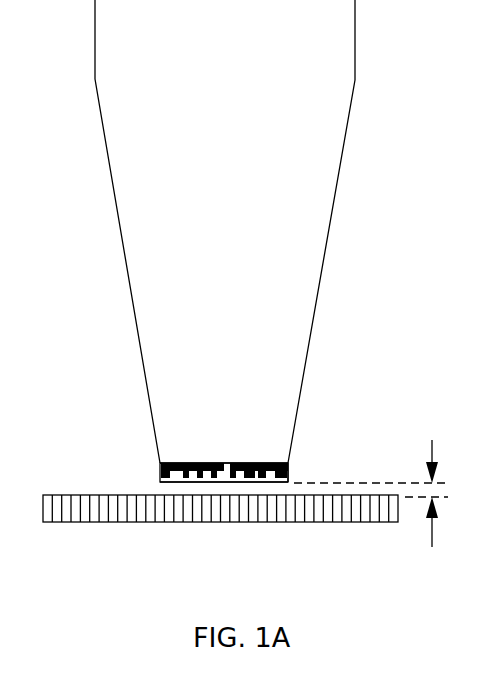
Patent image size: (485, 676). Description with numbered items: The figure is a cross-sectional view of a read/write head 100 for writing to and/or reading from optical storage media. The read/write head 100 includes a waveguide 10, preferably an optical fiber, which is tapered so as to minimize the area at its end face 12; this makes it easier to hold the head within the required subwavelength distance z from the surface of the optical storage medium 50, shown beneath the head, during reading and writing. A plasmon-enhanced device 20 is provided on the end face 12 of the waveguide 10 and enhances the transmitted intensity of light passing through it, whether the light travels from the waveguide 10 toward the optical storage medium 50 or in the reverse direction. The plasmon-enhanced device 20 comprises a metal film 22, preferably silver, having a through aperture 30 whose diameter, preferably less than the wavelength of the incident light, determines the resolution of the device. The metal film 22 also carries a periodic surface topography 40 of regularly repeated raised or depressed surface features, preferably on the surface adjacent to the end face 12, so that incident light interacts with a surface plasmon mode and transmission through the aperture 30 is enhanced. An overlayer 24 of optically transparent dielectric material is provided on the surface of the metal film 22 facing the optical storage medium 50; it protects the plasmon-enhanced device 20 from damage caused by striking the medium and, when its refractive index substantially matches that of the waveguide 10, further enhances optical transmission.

The waveguide 10 is at (133, 310).
The end face 12 is at (270, 463).
The plasmon-enhanced device 20 is at (160, 470).
The metal film 22 is at (288, 468).
The overlayer 24 is at (163, 481).
The aperture 30 is at (218, 468).
The periodic surface topography 40 is at (263, 465).
The optical storage medium 50 is at (290, 508).
The read/write head 100 is at (318, 323).